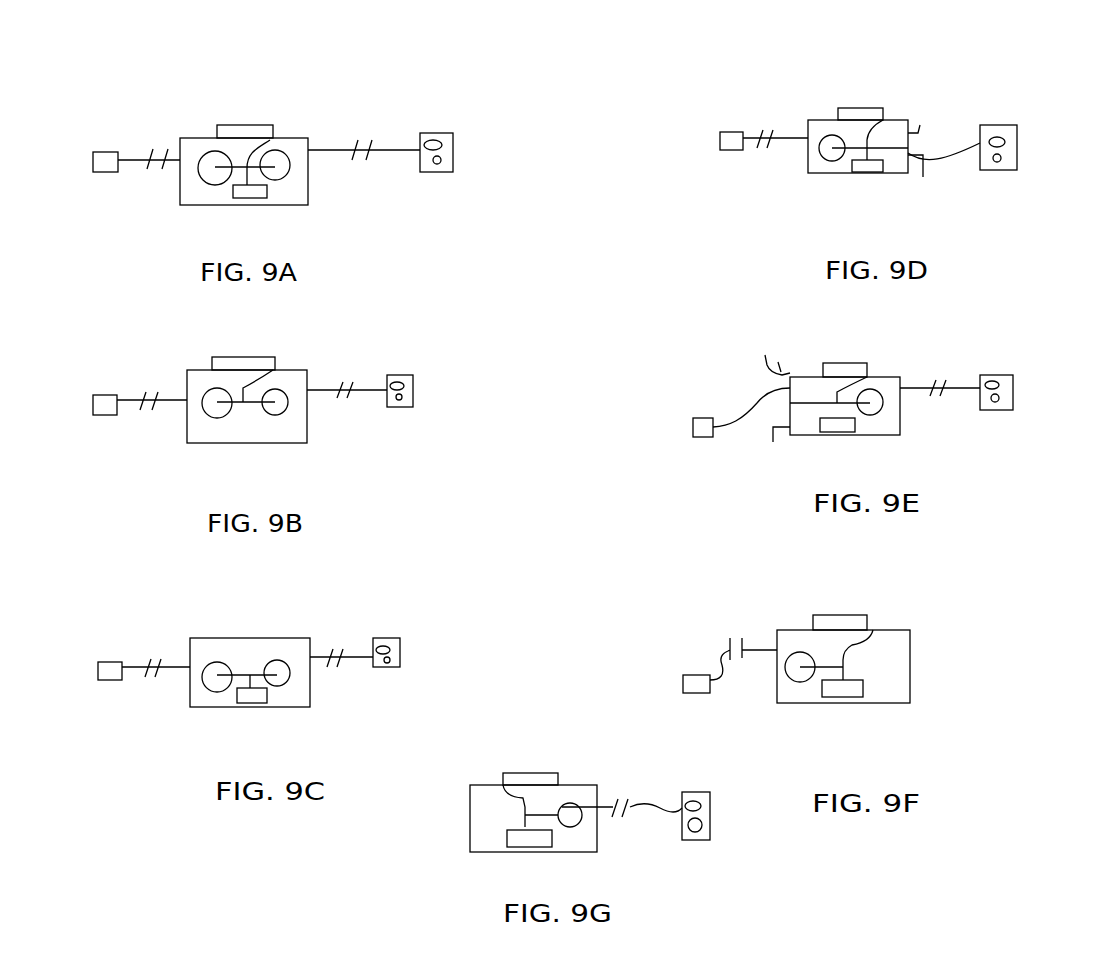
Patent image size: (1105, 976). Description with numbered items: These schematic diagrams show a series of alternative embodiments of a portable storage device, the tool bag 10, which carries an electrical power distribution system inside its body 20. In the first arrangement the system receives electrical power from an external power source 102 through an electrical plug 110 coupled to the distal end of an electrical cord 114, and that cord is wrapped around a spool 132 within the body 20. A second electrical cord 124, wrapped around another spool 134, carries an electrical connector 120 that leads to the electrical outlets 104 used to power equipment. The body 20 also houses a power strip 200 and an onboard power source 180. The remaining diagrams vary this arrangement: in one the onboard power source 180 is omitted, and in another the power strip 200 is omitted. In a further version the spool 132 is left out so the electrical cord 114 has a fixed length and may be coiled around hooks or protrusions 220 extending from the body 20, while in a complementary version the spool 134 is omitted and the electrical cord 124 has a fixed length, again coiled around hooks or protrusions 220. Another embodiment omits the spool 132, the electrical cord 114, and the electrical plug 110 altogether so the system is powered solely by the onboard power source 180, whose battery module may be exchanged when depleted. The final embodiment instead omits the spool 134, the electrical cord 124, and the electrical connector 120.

In FIG. 9A, the tool bag 10 is at (406, 91).
In FIG. 9B, the tool bag 10 is at (335, 345).
In FIG. 9C, the tool bag 10 is at (356, 591).
In FIG. 9D, the tool bag 10 is at (976, 81).
In FIG. 9E, the tool bag 10 is at (951, 314).
In FIG. 9F, the tool bag 10 is at (955, 571).
In FIG. 9G, the tool bag 10 is at (529, 729).
In FIG. 9A, the body 20 is at (310, 138).
In FIG. 9B, the body 20 is at (307, 442).
In FIG. 9C, the body 20 is at (313, 638).
In FIG. 9E, the body 20 is at (900, 377).
In FIG. 9F, the body 20 is at (910, 632).
In FIG. 9G, the body 20 is at (472, 785).
In FIG. 9A, the external power source 102 is at (455, 133).
In FIG. 9B, the external power source 102 is at (413, 375).
In FIG. 9C, the external power source 102 is at (400, 638).
In FIG. 9D, the external power source 102 is at (1018, 128).
In FIG. 9E, the external power source 102 is at (1017, 388).
In FIG. 9G, the external power source 102 is at (710, 795).
In FIG. 9A, the electrical outlets 104 is at (134, 150).
In FIG. 9A, the electrical plug 110 is at (440, 138).
In FIG. 9B, the electrical plug 110 is at (395, 380).
In FIG. 9C, the electrical plug 110 is at (378, 642).
In FIG. 9D, the electrical plug 110 is at (1002, 138).
In FIG. 9E, the electrical plug 110 is at (992, 380).
In FIG. 9G, the electrical plug 110 is at (680, 800).
In FIG. 9A, the electrical cord 114 is at (390, 157).
In FIG. 9B, the electrical cord 114 is at (365, 392).
In FIG. 9C, the electrical cord 114 is at (350, 660).
In FIG. 9D, the electrical cord 114 is at (942, 157).
In FIG. 9E, the electrical cord 114 is at (970, 377).
In FIG. 9G, the electrical cord 114 is at (655, 807).
In FIG. 9A, the electrical connector 120 is at (95, 152).
In FIG. 9B, the electrical connector 120 is at (108, 395).
In FIG. 9C, the electrical connector 120 is at (117, 680).
In FIG. 9D, the electrical connector 120 is at (733, 152).
In FIG. 9E, the electrical connector 120 is at (705, 438).
In FIG. 9F, the electrical connector 120 is at (698, 693).
In FIG. 9B, the electrical cord 124 is at (165, 402).
In FIG. 9C, the electrical cord 124 is at (135, 663).
In FIG. 9D, the electrical cord 124 is at (790, 136).
In FIG. 9E, the electrical cord 124 is at (740, 420).
In FIG. 9F, the electrical cord 124 is at (746, 650).
In FIG. 9A, the spool 132 is at (290, 177).
In FIG. 9B, the spool 132 is at (280, 415).
In FIG. 9C, the spool 132 is at (290, 678).
In FIG. 9E, the spool 132 is at (880, 418).
In FIG. 9G, the spool 132 is at (573, 800).
In FIG. 9A, the spool 134 is at (198, 180).
In FIG. 9B, the spool 134 is at (217, 418).
In FIG. 9C, the spool 134 is at (215, 692).
In FIG. 9D, the spool 134 is at (827, 165).
In FIG. 9F, the spool 134 is at (800, 683).
In FIG. 9A, the onboard power source 180 is at (262, 198).
In FIG. 9C, the onboard power source 180 is at (257, 705).
In FIG. 9D, the onboard power source 180 is at (890, 172).
In FIG. 9E, the onboard power source 180 is at (818, 433).
In FIG. 9F, the onboard power source 180 is at (865, 693).
In FIG. 9G, the onboard power source 180 is at (507, 832).
In FIG. 9A, the power strip 200 is at (250, 125).
In FIG. 9B, the power strip 200 is at (250, 357).
In FIG. 9D, the power strip 200 is at (855, 108).
In FIG. 9E, the power strip 200 is at (840, 361).
In FIG. 9F, the power strip 200 is at (837, 615).
In FIG. 9G, the power strip 200 is at (540, 773).
In FIG. 9D, the hooks or protrusions 220 is at (922, 127).
In FIG. 9E, the hooks or protrusions 220 is at (767, 351).